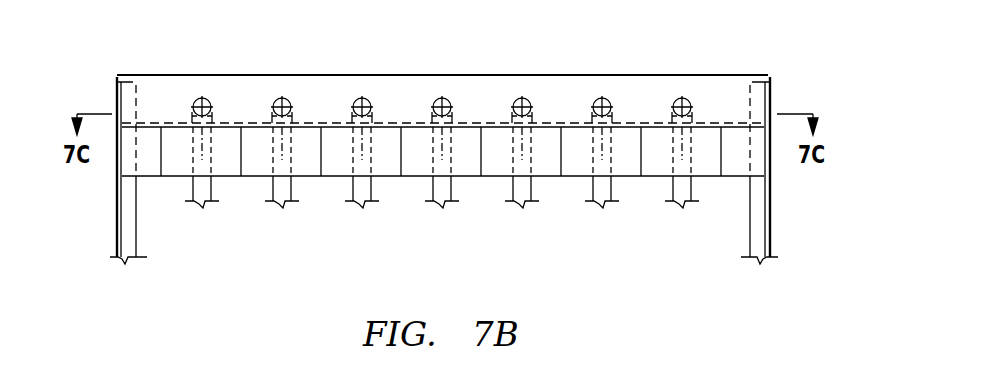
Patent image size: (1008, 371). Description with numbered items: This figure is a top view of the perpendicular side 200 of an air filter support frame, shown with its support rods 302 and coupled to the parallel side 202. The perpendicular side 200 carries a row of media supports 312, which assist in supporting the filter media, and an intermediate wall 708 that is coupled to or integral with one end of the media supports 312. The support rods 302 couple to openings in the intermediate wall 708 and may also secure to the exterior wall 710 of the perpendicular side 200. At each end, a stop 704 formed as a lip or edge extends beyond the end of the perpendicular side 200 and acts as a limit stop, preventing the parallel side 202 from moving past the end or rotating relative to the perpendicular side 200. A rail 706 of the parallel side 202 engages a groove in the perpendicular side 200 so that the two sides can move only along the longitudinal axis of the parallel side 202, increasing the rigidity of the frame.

The perpendicular side 200 is at (584, 73).
The parallel side 202 is at (116, 222).
The support rods 302 is at (693, 190).
The media supports 312 is at (628, 170).
The stop 704 is at (116, 83).
The rail 706 is at (138, 233).
The intermediate wall 708 is at (310, 123).
The exterior wall 710 is at (456, 73).